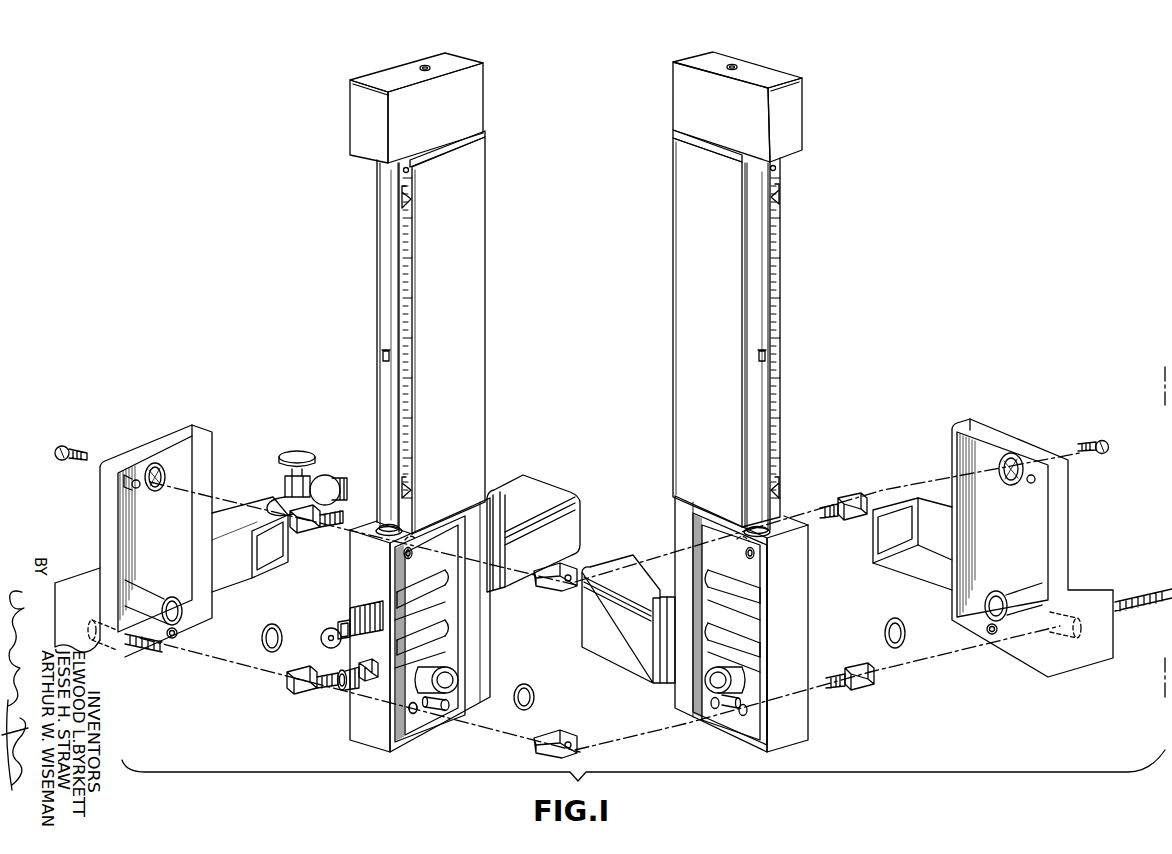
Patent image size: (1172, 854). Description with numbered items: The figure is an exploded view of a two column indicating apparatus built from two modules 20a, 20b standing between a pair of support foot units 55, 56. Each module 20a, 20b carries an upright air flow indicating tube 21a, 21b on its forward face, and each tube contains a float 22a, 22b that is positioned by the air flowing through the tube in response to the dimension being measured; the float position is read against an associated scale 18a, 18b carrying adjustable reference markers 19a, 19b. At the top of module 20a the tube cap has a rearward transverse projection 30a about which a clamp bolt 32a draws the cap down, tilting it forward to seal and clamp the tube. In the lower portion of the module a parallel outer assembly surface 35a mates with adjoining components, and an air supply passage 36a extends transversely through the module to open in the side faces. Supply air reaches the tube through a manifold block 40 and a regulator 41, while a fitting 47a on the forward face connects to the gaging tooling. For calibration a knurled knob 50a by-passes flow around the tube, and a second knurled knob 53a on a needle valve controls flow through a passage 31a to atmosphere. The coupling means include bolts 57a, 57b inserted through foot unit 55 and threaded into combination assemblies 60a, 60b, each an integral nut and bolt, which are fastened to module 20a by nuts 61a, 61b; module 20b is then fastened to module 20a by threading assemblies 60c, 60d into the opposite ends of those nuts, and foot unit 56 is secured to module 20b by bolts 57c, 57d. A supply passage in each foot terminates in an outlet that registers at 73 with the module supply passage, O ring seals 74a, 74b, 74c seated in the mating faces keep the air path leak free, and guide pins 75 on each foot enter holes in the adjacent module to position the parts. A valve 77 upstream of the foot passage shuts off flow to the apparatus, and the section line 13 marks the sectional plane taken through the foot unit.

The section line 13 is at (1162, 366).
The scale 18a is at (411, 293).
The scale 18b is at (780, 311).
The reference marker 19a is at (411, 198).
The reference marker 19b is at (780, 197).
The module 20a is at (405, 284).
The module 20b is at (780, 293).
The air flow indicating tube 21a is at (378, 258).
The air flow indicating tube 21b is at (763, 278).
The float 22a is at (382, 355).
The float 22b is at (759, 356).
The projection 30a is at (481, 128).
The passage 31a is at (344, 640).
The bolt 32a is at (423, 65).
The outer assembly surface 35a is at (395, 718).
The air supply passage 36a is at (458, 687).
The manifold block 40 is at (488, 652).
The regulator 41 is at (535, 482).
The fitting 47a is at (343, 692).
The knurled knob 50a is at (353, 608).
The knurled knob 53a is at (324, 631).
The foot unit 55 is at (106, 511).
The foot unit 56 is at (1064, 521).
The bolt 57a is at (60, 457).
The bolt 57b is at (148, 650).
The bolt 57c is at (1106, 440).
The bolt 57d is at (1153, 611).
The combination assembly 60a is at (303, 530).
The combination assembly 60b is at (297, 688).
The combination assembly 60c is at (852, 498).
The combination assembly 60d is at (860, 690).
The nut 61a is at (548, 582).
The nut 61b is at (575, 742).
The registering communication 73 is at (172, 598).
The O ring seal 74a is at (260, 639).
The O ring seal 74b is at (533, 691).
The O ring seal 74c is at (894, 618).
The guide pin 75 is at (132, 484).
The valve 77 is at (320, 483).